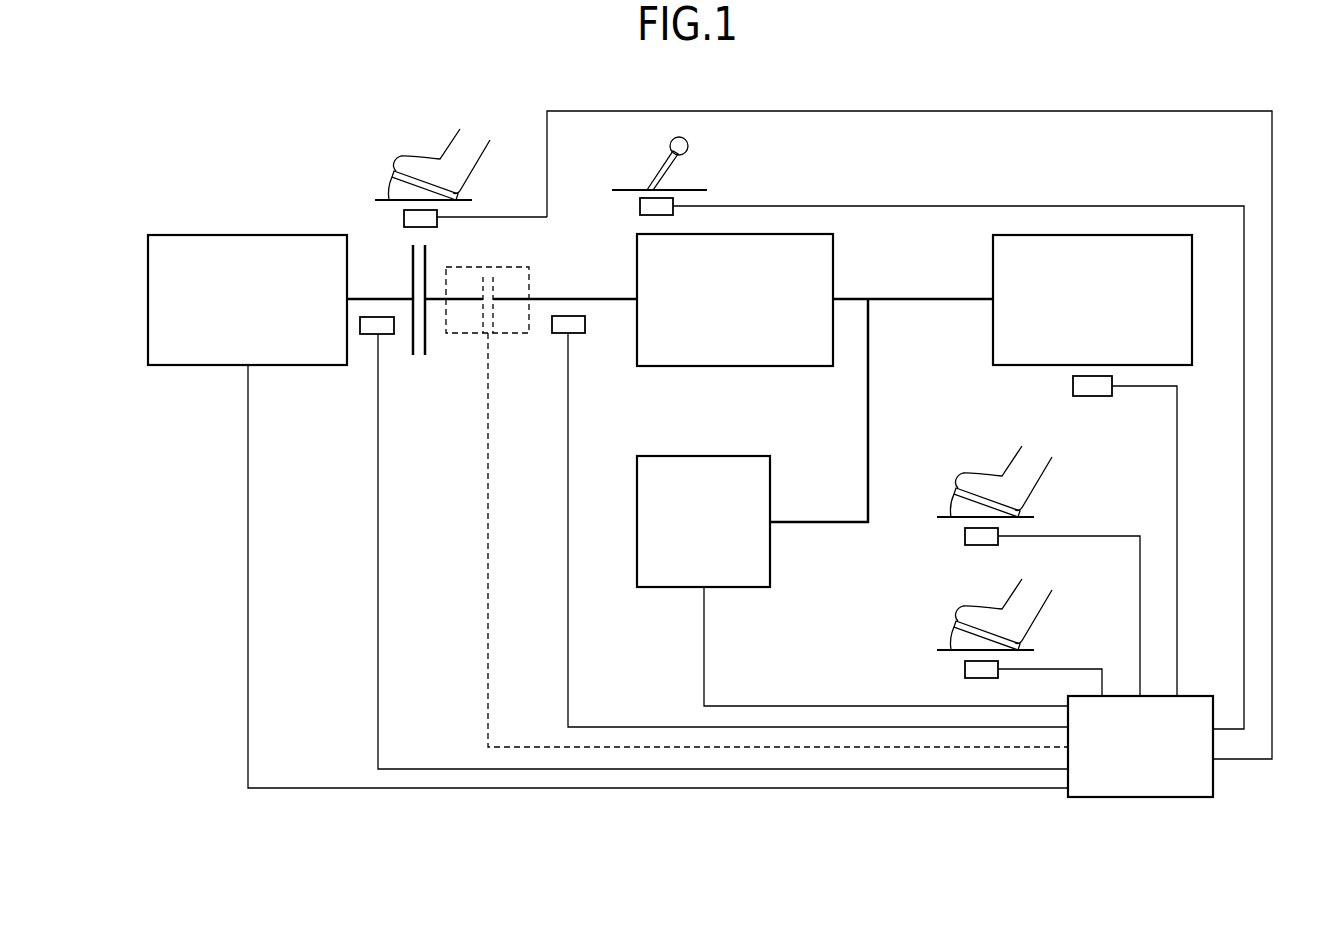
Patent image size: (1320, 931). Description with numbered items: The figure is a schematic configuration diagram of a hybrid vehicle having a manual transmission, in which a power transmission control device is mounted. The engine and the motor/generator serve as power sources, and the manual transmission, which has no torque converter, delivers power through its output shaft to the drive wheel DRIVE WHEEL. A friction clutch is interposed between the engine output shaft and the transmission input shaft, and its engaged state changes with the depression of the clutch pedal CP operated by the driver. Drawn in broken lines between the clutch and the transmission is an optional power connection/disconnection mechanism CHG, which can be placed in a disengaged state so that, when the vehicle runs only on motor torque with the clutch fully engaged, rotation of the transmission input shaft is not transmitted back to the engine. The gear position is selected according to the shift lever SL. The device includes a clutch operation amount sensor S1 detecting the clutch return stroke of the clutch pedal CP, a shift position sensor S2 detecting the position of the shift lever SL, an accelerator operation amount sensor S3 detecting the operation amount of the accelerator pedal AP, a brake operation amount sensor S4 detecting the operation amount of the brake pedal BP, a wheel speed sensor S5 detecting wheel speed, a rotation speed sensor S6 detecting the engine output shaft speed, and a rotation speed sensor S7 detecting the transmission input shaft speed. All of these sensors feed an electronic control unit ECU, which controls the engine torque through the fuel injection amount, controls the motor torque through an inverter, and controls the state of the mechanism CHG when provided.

The drive wheel DRIVE WHEEL is at (1092, 300).
The electronic control unit ECU is at (1140, 746).
The power connection/disconnection mechanism CHG is at (459, 333).
The clutch pedal CP is at (395, 180).
The clutch operation amount sensor S1 is at (404, 217).
The shift lever SL is at (656, 170).
The shift position sensor S2 is at (640, 206).
The accelerator operation amount sensor S3 is at (965, 536).
The brake operation amount sensor S4 is at (965, 669).
The wheel speed sensor S5 is at (1073, 386).
The rotation speed sensor S6 is at (366, 334).
The rotation speed sensor S7 is at (572, 333).
The accelerator pedal AP is at (953, 497).
The brake pedal BP is at (953, 630).